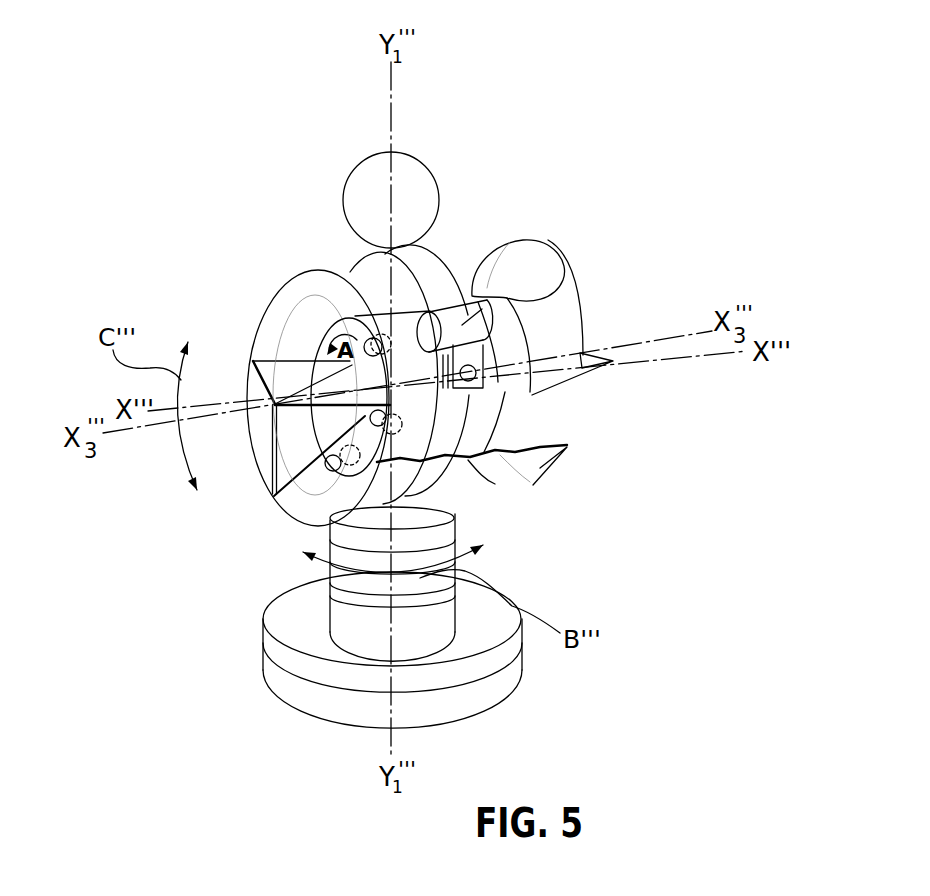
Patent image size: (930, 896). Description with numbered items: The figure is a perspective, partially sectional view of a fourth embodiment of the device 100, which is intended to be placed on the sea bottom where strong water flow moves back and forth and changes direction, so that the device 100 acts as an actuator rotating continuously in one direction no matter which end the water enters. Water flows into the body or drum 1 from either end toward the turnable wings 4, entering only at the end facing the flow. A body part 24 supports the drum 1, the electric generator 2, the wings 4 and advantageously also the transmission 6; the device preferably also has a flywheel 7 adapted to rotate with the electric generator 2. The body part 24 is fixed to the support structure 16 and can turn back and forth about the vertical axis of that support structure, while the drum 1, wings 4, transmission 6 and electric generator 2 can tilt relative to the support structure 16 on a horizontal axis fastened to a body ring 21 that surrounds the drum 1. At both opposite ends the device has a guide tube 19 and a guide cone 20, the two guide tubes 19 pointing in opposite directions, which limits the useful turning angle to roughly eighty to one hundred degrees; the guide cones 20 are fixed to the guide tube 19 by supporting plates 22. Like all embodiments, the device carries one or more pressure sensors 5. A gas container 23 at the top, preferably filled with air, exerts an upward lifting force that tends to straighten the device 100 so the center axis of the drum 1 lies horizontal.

The device 100 is at (632, 236).
The drum 1 is at (327, 352).
The electric generator 2 is at (482, 387).
The wings 4 is at (345, 322).
The pressure sensors 5 is at (530, 302).
The transmission 6 is at (465, 415).
The flywheel 7 is at (470, 403).
The support structure 16 is at (290, 620).
The guide tube 19 is at (573, 462).
The guide cone 20 is at (455, 390).
The body ring 21 is at (432, 272).
The supporting plates 22 is at (257, 353).
The gas container 23 is at (432, 167).
The body part 24 is at (458, 532).